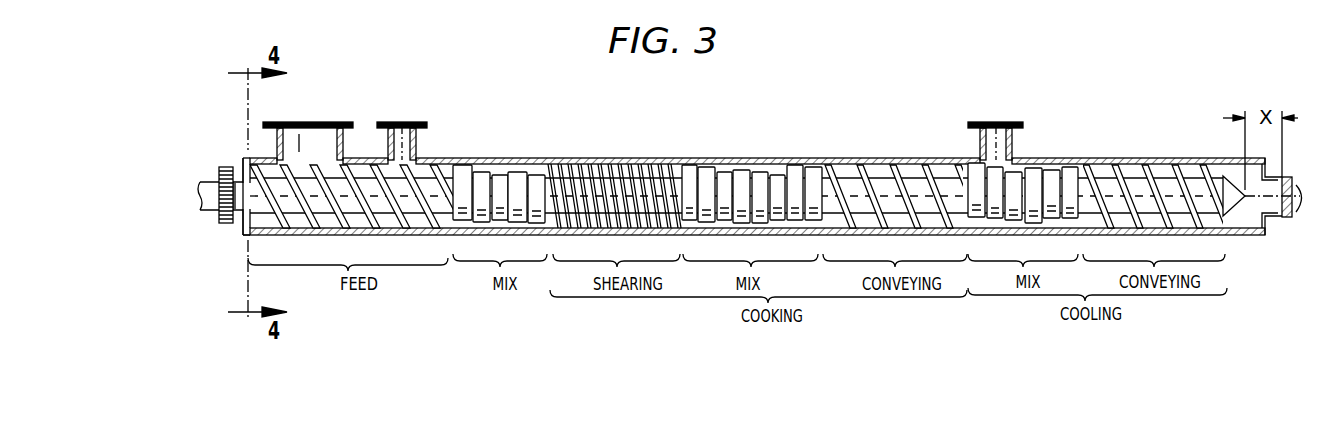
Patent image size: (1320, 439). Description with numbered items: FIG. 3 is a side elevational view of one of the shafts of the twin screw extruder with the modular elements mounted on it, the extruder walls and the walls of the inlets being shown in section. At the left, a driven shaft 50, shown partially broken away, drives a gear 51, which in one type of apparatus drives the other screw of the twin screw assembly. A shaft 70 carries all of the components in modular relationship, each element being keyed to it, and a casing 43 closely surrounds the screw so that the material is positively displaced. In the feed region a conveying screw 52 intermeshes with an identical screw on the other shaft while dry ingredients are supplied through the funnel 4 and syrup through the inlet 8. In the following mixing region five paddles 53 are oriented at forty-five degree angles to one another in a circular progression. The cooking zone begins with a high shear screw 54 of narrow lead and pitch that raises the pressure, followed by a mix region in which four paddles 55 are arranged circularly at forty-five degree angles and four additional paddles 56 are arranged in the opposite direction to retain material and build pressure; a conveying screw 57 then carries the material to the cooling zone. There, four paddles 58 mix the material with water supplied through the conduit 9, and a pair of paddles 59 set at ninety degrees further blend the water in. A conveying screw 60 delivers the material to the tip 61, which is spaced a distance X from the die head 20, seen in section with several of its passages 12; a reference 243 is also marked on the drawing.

The funnel 4 is at (320, 133).
The inlet 8 is at (416, 140).
The conduit 9 is at (998, 128).
The passages 12 is at (1301, 190).
The die head 20 is at (1290, 177).
The casing 43 is at (285, 236).
The driven shaft 50 is at (200, 183).
The gear 51 is at (219, 168).
The conveying screw 52 is at (250, 237).
The paddles 53 is at (478, 172).
The high shear screw 54 is at (620, 170).
The paddles 55 is at (726, 168).
The paddles 56 is at (760, 173).
The conveying screw 57 is at (878, 165).
The paddles 58 is at (977, 162).
The paddles 59 is at (1067, 175).
The conveying screw 60 is at (1127, 167).
The tip 61 is at (1233, 216).
The shaft 70 is at (236, 212).
The end plate 243 is at (243, 160).